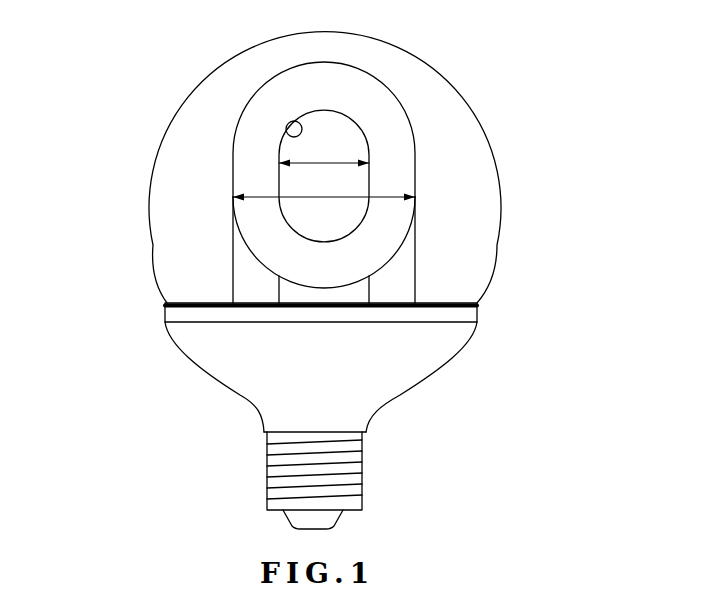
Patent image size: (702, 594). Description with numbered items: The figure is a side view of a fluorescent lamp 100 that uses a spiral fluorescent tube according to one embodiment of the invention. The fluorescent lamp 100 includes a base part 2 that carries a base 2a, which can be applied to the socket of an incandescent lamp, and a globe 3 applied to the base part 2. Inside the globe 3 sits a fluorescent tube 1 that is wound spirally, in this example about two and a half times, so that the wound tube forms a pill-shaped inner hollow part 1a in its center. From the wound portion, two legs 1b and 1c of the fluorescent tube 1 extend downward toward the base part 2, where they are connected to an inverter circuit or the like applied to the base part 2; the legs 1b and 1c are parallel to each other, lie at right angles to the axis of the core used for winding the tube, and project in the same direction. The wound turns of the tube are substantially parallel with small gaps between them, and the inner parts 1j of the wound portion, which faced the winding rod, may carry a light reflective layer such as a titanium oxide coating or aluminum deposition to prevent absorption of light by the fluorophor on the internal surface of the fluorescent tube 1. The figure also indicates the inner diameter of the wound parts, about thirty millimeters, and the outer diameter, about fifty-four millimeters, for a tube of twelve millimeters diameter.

The fluorescent lamp 100 is at (156, 155).
The fluorescent tube 1 is at (413, 222).
The inner hollow part 1a is at (347, 137).
The leg 1b is at (392, 282).
The leg 1c is at (245, 275).
The inner part 1j is at (286, 134).
The base part 2 is at (408, 355).
The base 2a is at (353, 478).
The globe 3 is at (467, 100).